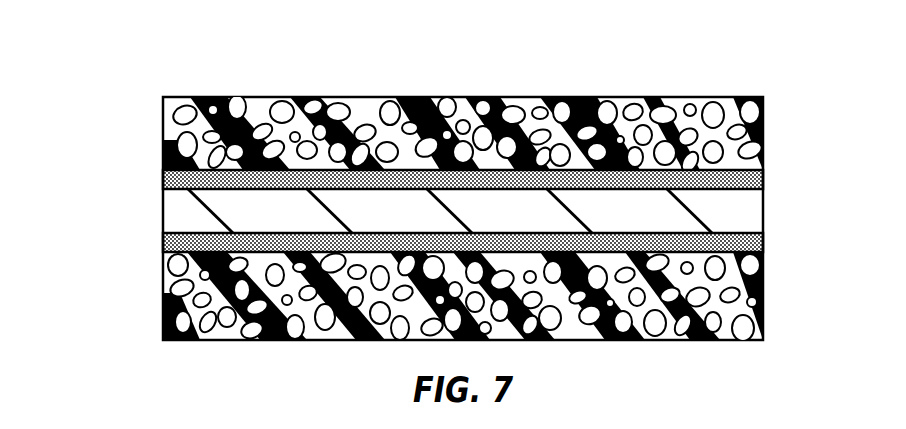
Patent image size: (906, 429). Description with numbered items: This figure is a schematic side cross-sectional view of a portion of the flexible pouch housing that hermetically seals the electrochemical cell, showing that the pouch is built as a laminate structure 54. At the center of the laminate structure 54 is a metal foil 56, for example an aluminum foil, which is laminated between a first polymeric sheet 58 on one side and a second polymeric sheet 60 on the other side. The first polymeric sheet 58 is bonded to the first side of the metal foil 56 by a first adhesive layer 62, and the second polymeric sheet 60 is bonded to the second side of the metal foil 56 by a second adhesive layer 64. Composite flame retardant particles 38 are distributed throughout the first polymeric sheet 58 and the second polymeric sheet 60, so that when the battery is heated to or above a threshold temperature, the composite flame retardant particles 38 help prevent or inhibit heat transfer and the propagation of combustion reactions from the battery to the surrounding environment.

The laminate structure 54 is at (138, 80).
The first polymeric sheet 58 is at (163, 138).
The second adhesive layer 64 is at (765, 178).
The metal foil 56 is at (163, 206).
The first adhesive layer 62 is at (765, 243).
The second polymeric sheet 60 is at (163, 309).
The composite flame retardant particles 38 is at (338, 102).